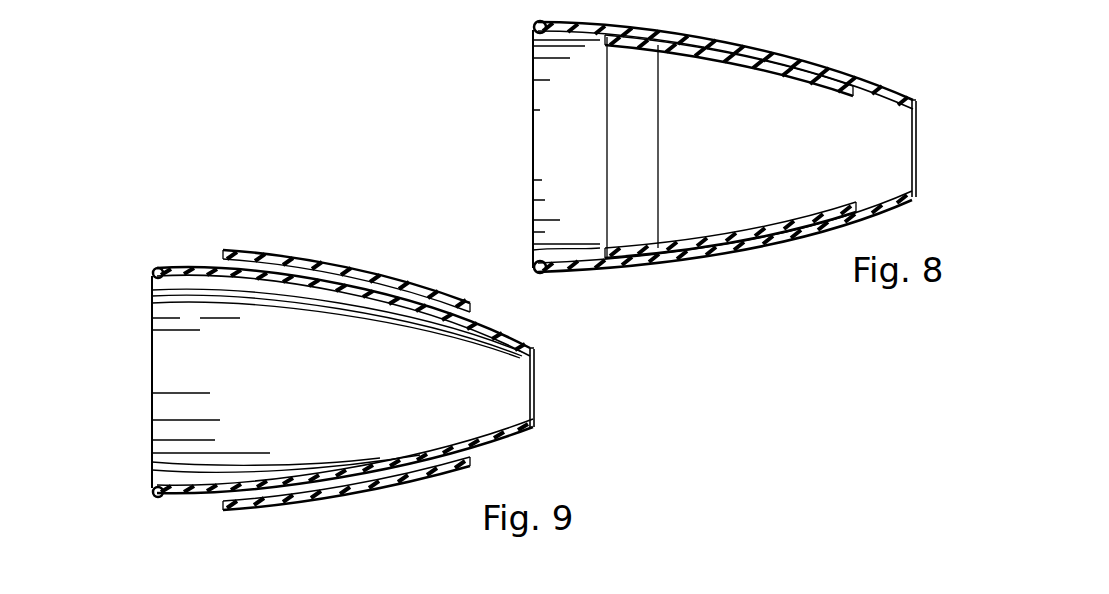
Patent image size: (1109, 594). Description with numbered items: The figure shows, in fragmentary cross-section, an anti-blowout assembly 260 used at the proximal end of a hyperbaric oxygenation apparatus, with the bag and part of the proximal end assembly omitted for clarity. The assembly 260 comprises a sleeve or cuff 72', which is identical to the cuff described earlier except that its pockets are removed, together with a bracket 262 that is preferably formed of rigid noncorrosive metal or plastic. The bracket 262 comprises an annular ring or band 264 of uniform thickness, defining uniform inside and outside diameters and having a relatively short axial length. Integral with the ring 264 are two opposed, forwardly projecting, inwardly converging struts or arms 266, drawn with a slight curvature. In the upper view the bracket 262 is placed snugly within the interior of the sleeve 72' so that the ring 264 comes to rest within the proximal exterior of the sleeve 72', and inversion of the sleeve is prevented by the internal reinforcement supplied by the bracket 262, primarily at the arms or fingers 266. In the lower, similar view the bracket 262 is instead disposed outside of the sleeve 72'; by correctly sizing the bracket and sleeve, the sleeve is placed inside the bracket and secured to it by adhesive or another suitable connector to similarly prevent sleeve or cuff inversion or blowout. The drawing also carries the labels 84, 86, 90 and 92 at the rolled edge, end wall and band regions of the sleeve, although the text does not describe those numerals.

In FIG. 8, the anti-blowout assembly 260 is at (830, 48).
In FIG. 9, the anti-blowout assembly 260 is at (530, 334).
In FIG. 8, the bracket 262 is at (771, 82).
In FIG. 9, the bracket 262 is at (342, 272).
In FIG. 8, the annular ring 264 is at (643, 133).
In FIG. 8, the struts or arms 266 is at (738, 62).
In FIG. 9, the struts or arms 266 is at (297, 270).
In FIG. 8, the sleeve or cuff 72' is at (745, 65).
In FIG. 9, the sleeve or cuff 72' is at (391, 320).
In FIG. 8, the rolled edge 84 is at (533, 31).
In FIG. 9, the rolled edge 84 is at (152, 492).
In FIG. 8, the end wall 86 is at (918, 109).
In FIG. 9, the end wall 86 is at (538, 358).
In FIG. 8, the lower band 90 is at (746, 256).
In FIG. 9, the lower band 90 is at (510, 444).
In FIG. 8, the inner band surface 92 is at (886, 196).
In FIG. 9, the inner band surface 92 is at (466, 340).